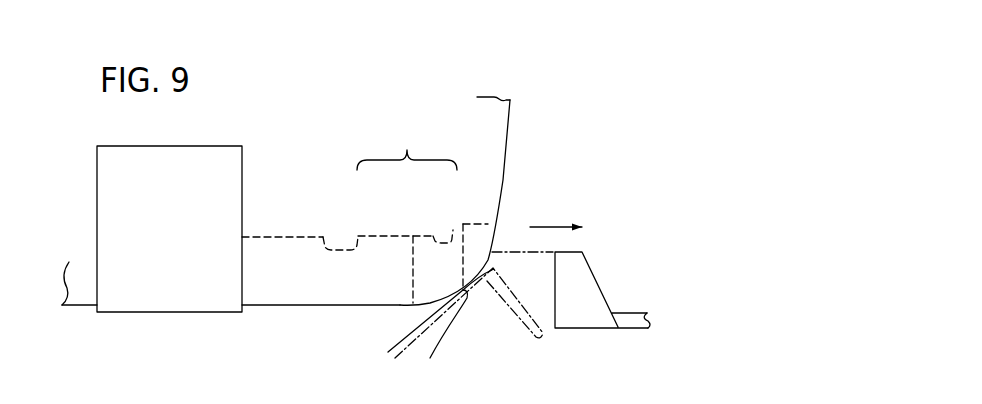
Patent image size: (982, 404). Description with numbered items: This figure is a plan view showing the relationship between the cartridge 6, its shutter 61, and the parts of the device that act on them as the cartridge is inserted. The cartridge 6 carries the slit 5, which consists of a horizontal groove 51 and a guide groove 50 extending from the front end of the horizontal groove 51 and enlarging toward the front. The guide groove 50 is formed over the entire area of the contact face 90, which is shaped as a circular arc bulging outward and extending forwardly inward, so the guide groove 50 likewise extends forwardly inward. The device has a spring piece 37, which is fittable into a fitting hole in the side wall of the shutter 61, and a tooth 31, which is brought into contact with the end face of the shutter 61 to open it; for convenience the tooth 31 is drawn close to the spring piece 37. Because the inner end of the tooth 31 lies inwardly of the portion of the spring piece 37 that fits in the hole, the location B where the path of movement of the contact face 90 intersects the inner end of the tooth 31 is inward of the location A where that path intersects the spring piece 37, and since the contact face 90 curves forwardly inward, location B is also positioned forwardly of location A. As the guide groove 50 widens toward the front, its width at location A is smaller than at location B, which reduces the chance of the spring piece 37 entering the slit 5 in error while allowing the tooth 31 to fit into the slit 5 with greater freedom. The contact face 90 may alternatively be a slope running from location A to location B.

The shutter 61 is at (210, 157).
The slit 5 is at (407, 147).
The horizontal groove 51 is at (358, 236).
The guide groove 50 is at (452, 229).
The cartridge 6 is at (497, 125).
The location B is at (498, 246).
The tooth 31 is at (585, 283).
The location A is at (428, 338).
The spring piece 37 is at (513, 320).
The contact face 90 is at (487, 275).